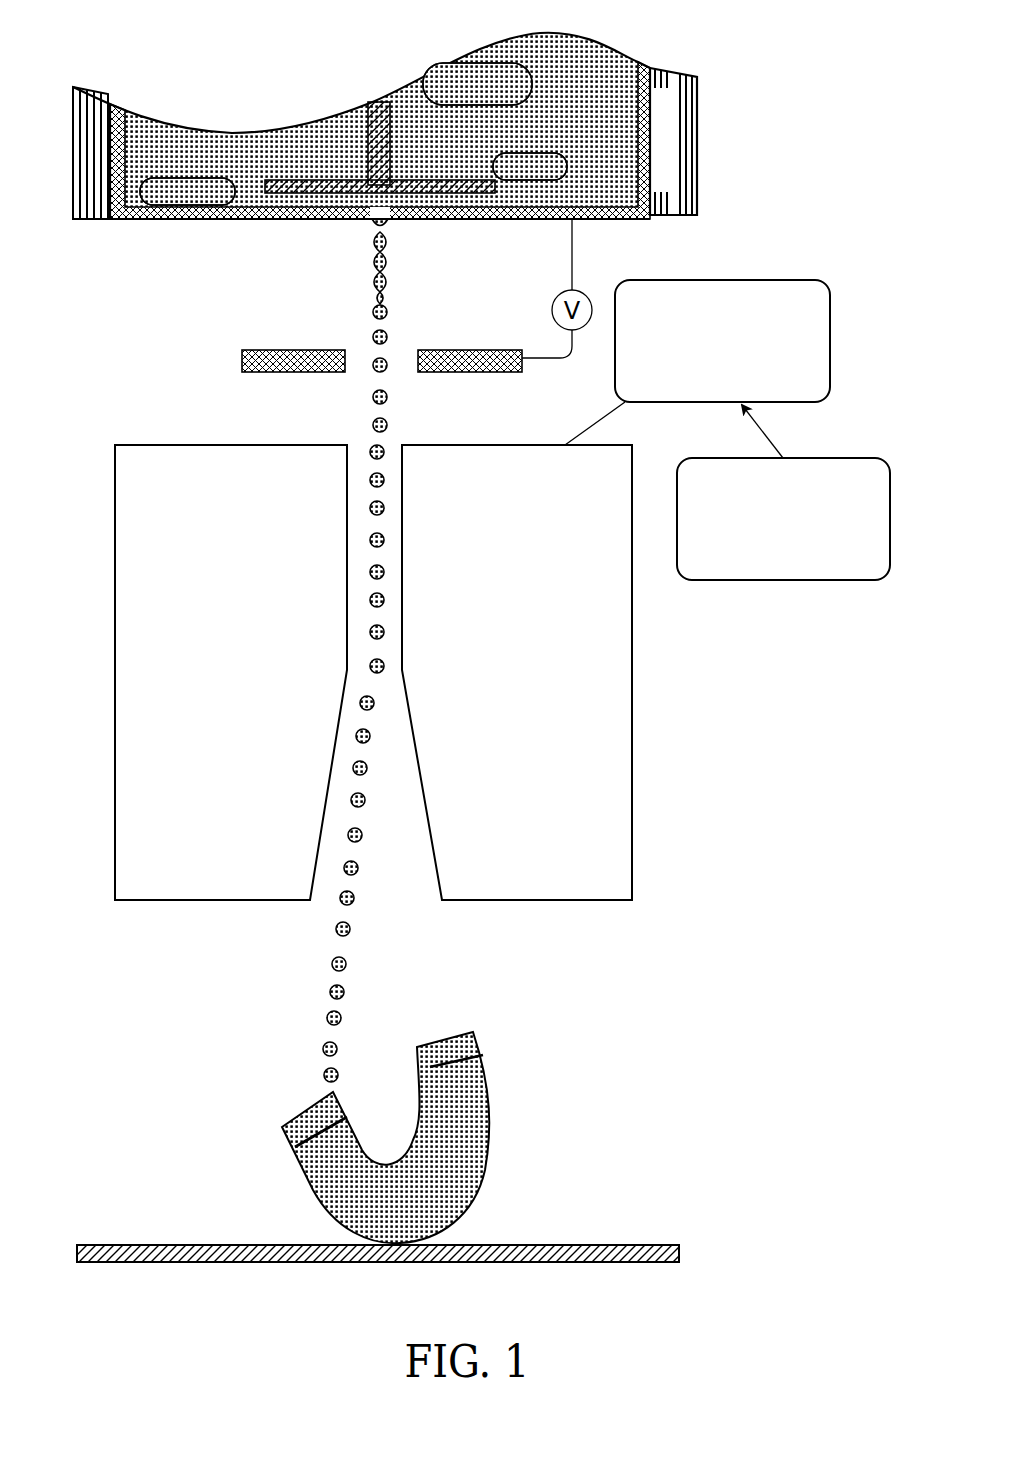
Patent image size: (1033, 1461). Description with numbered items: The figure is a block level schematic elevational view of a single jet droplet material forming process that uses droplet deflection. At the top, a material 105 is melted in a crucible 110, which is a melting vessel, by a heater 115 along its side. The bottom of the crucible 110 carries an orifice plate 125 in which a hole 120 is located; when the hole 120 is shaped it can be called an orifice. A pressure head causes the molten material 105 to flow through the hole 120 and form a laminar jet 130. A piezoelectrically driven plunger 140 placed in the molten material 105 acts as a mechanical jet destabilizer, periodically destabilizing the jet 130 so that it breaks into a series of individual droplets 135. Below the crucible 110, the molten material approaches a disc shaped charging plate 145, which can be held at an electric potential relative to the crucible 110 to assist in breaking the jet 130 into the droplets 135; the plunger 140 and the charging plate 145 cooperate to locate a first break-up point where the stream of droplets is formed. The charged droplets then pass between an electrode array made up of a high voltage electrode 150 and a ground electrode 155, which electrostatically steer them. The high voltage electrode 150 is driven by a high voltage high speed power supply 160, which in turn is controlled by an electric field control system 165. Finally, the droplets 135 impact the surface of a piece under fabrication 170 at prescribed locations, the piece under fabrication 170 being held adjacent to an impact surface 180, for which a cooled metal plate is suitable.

The material 105 is at (278, 133).
The crucible 110 is at (220, 220).
The heater 115 is at (698, 160).
The hole 120 is at (372, 226).
The orifice plate 125 is at (410, 197).
The laminar jet 130 is at (372, 278).
The droplets 135 is at (389, 312).
The plunger 140 is at (378, 102).
The charging plate 145 is at (455, 372).
The high voltage electrode 150 is at (634, 688).
The ground electrode 155 is at (115, 628).
The high voltage high speed power supply 160 is at (782, 280).
The electric field control system 165 is at (843, 458).
The piece under fabrication 170 is at (478, 1108).
The impact surface 180 is at (632, 1245).